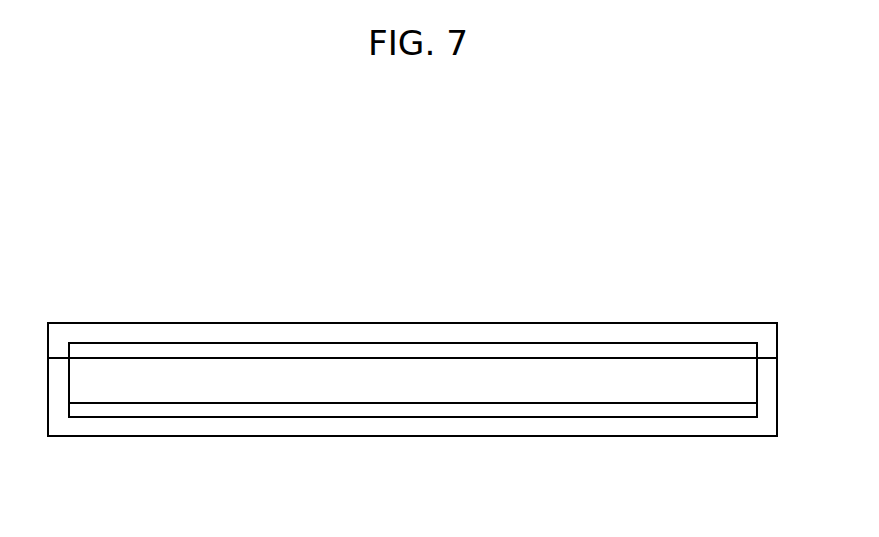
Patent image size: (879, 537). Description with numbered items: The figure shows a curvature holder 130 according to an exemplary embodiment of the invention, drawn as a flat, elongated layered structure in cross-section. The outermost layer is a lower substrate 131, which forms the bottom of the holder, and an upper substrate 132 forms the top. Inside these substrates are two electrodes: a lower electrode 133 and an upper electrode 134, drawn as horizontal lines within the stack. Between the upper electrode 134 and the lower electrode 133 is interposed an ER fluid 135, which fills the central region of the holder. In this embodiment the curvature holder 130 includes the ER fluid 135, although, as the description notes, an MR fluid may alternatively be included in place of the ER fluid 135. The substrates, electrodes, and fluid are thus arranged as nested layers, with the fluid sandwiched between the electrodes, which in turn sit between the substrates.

The curvature holder 130 is at (438, 232).
The lower substrate 131 is at (612, 430).
The upper substrate 132 is at (480, 332).
The lower electrode 133 is at (495, 410).
The upper electrode 134 is at (537, 348).
The ER fluid 135 is at (417, 390).